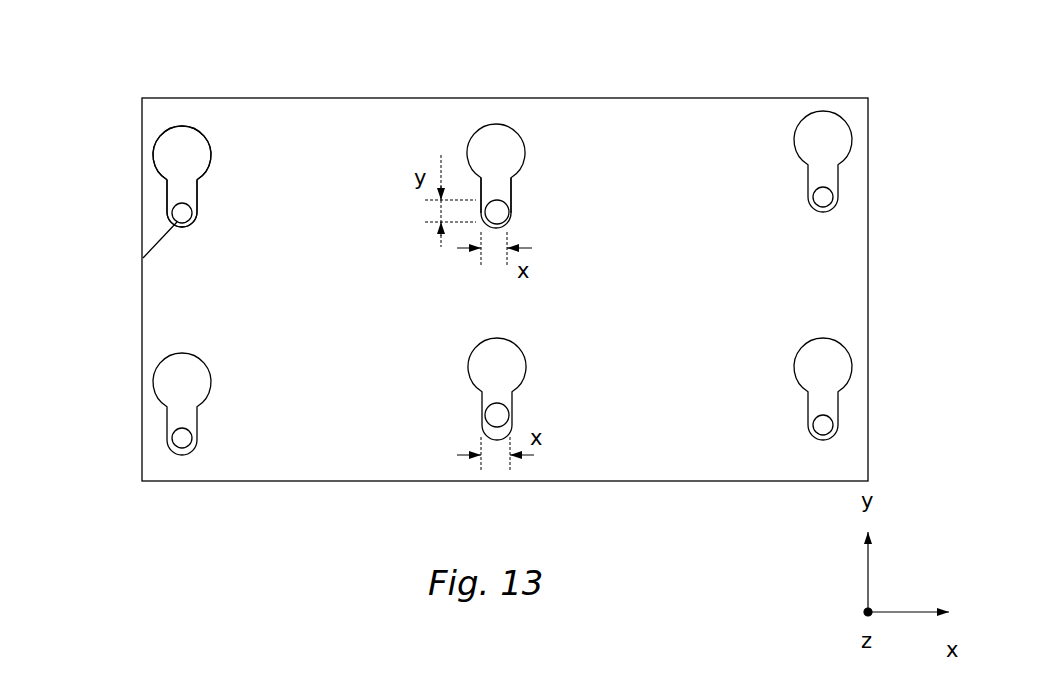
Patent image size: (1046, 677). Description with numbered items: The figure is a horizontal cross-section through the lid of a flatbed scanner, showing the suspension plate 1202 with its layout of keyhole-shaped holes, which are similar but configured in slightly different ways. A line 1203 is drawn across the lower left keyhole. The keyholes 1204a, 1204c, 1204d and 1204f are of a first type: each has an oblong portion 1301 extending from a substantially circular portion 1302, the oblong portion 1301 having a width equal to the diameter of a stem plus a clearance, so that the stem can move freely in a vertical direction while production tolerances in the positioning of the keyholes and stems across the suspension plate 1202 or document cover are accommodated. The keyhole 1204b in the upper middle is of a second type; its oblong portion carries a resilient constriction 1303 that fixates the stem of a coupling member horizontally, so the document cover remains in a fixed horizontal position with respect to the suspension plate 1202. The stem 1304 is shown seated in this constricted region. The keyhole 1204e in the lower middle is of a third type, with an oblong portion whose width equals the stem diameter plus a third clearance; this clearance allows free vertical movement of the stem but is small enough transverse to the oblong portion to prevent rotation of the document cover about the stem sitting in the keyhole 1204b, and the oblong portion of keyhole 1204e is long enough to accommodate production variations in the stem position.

The suspension plate 1202 is at (427, 97).
The section line 1203 is at (143, 258).
The keyhole of the first type 1204a is at (209, 221).
The keyhole of the second type 1204b is at (533, 136).
The keyhole of the first type 1204c is at (792, 189).
The keyhole of the first type 1204d is at (791, 409).
The keyhole of the third type 1204e is at (461, 342).
The keyhole of the first type 1204f is at (219, 426).
The oblong portion 1301 is at (198, 188).
The substantially circular portion 1302 is at (212, 145).
The resilient constriction 1303 is at (511, 193).
The fastener shank 1304 is at (509, 211).